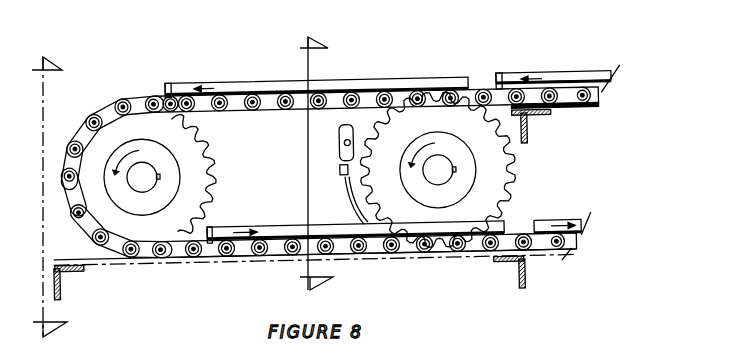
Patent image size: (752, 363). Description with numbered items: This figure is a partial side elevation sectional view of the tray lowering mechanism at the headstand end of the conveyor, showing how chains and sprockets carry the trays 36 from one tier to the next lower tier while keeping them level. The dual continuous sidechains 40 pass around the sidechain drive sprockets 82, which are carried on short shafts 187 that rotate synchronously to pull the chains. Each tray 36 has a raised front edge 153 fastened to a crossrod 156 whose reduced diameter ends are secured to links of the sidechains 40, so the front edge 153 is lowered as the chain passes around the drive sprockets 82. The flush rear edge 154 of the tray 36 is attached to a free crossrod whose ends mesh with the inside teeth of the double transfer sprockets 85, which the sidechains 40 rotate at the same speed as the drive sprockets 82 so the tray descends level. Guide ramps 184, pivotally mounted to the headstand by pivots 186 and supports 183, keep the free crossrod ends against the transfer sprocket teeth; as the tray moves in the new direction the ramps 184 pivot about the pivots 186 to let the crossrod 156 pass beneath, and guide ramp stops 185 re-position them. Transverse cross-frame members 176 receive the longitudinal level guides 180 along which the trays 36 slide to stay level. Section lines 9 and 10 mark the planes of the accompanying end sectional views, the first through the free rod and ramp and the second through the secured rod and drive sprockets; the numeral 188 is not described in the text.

The section 9— 9 is at (319, 166).
The section 10— 10 is at (54, 197).
The tray 36 is at (393, 138).
The sidechains 40 is at (329, 154).
The sidechain drive sprockets 82 is at (181, 175).
The double transfer sprockets 85 is at (461, 170).
The front edge 153 is at (165, 80).
The rear edge 154 is at (466, 74).
The crossrod 156 is at (170, 97).
The cross-frame members 176 is at (530, 134).
The level guides 180 is at (578, 112).
The supports 183 is at (313, 137).
The guide ramps 184 is at (358, 214).
The guide ramp stops 185 is at (338, 172).
The pivots 186 is at (340, 125).
The short shafts 187 is at (153, 179).
The sprocket shaft 188 is at (449, 178).